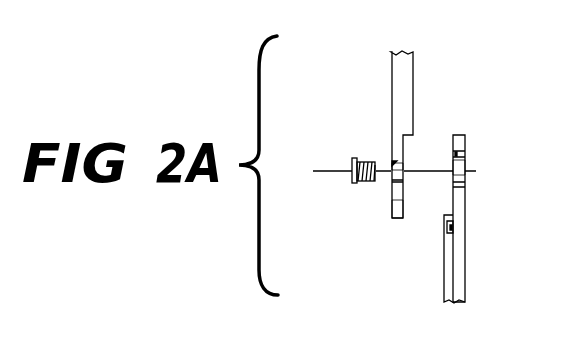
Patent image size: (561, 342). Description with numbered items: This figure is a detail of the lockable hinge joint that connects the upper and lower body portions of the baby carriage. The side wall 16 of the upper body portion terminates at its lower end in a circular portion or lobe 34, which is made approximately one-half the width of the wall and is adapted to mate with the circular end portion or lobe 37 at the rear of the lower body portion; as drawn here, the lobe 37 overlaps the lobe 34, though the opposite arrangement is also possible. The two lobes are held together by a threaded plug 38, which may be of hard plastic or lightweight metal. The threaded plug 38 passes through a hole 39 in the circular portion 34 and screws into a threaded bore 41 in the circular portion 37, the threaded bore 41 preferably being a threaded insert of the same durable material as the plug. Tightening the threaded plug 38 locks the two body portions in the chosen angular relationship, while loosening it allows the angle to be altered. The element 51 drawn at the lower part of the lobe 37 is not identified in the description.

The upper bar member 16 is at (391, 74).
The screw 38 is at (352, 160).
The notch 39 is at (393, 163).
The lower portion of bar 34 is at (392, 207).
The vertical bar 37 is at (465, 198).
The band 41 is at (466, 170).
The lower bar member 51 is at (465, 283).